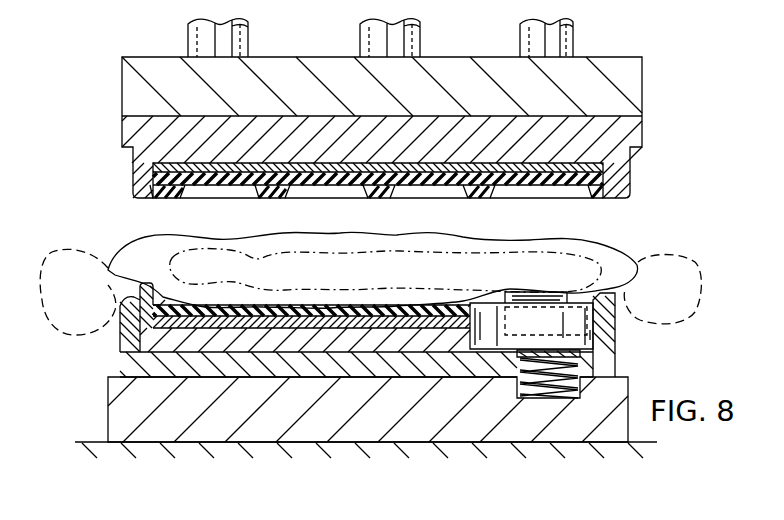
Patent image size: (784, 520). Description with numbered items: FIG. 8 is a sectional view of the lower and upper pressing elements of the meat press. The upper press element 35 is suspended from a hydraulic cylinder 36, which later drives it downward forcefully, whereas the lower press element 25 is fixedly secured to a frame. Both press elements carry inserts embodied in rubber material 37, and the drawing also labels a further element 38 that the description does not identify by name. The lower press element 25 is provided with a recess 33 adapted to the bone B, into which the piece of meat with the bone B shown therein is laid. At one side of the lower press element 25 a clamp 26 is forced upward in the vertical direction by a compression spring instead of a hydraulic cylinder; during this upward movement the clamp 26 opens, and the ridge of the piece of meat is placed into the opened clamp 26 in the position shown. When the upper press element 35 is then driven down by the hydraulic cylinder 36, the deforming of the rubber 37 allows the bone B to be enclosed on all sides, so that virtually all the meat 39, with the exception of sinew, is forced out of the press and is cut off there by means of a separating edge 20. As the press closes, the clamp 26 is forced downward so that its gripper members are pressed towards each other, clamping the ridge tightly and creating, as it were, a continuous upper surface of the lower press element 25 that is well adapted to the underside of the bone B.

The upper press element 35 is at (613, 133).
The hydraulic cylinder 36 is at (362, 38).
The rubber material 37 is at (432, 170).
The support pads 38 is at (398, 192).
The recess 33 is at (417, 310).
The clamp 26 is at (572, 288).
The separating edge 20 is at (120, 348).
The lower press element 25 is at (110, 376).
The meat 39 is at (80, 246).
The bone B is at (468, 242).